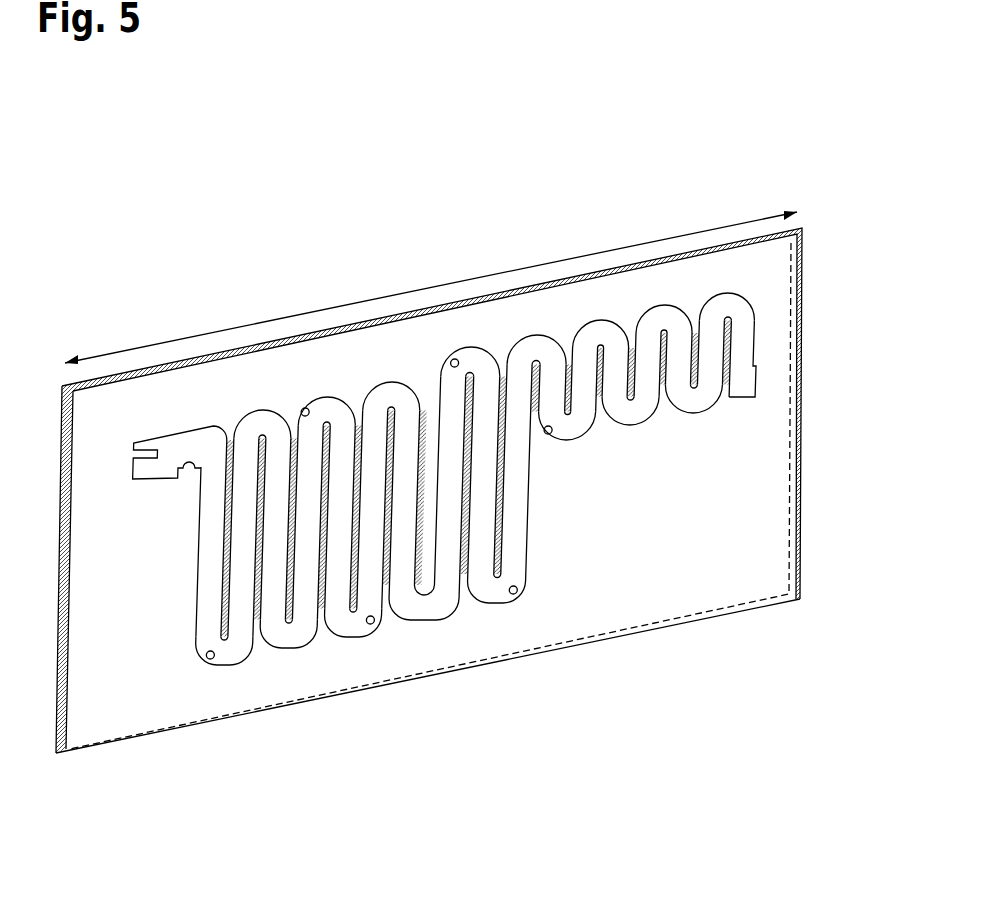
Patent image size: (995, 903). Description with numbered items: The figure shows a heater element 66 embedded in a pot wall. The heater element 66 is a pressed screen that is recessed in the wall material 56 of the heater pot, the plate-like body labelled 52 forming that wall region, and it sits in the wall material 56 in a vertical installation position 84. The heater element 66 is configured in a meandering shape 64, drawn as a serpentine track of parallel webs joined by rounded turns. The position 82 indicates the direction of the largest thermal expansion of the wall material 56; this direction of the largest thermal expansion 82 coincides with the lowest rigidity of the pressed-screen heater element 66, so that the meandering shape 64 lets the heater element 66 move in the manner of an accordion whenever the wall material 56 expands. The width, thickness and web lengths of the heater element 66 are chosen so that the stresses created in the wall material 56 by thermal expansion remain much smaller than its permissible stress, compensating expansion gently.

The plate 52 is at (774, 288).
The wall material 56 is at (673, 597).
The meandering shape 64 is at (392, 403).
The heater element 66 is at (233, 642).
The direction of the largest thermal expansion 82 is at (521, 262).
The vertical installation position 84 is at (225, 416).